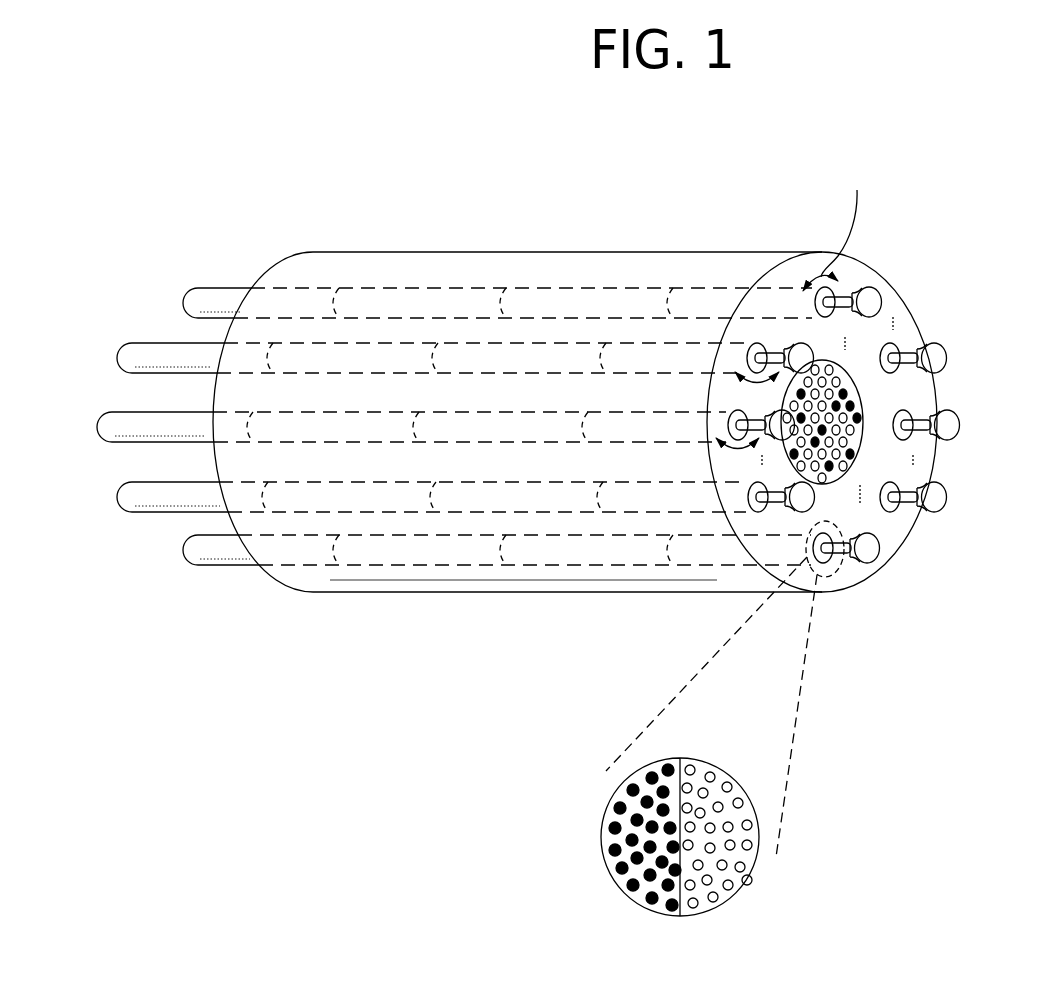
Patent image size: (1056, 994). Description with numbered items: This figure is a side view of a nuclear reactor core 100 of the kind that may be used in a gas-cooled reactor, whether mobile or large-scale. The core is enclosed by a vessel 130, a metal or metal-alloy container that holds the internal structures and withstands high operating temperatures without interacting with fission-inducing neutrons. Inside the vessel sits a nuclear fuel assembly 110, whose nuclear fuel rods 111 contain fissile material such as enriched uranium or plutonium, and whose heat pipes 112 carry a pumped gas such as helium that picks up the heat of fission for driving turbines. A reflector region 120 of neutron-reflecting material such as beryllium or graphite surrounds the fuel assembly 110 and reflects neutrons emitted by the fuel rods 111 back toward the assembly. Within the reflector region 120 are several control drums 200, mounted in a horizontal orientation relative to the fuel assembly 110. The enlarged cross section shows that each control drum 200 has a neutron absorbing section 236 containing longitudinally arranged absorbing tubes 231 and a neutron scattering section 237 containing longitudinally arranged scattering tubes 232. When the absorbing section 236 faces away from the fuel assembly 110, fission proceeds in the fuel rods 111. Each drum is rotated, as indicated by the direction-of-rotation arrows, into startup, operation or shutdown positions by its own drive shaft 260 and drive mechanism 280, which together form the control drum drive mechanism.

The nuclear reactor core 100 is at (393, 184).
The nuclear fuel assembly 110 is at (870, 454).
The nuclear fuel rods 111 is at (866, 395).
The heat pipes 112 is at (866, 413).
The reflector region 120 is at (797, 263).
The vessel 130 is at (882, 257).
The control drums 200 is at (540, 302).
The absorbing tube 231 is at (612, 801).
The scattering tube 232 is at (734, 821).
The neutron absorbing section 236 is at (612, 857).
The neutron scattering section 237 is at (740, 877).
The drive shaft 260 is at (898, 514).
The drive mechanism 280 is at (950, 496).